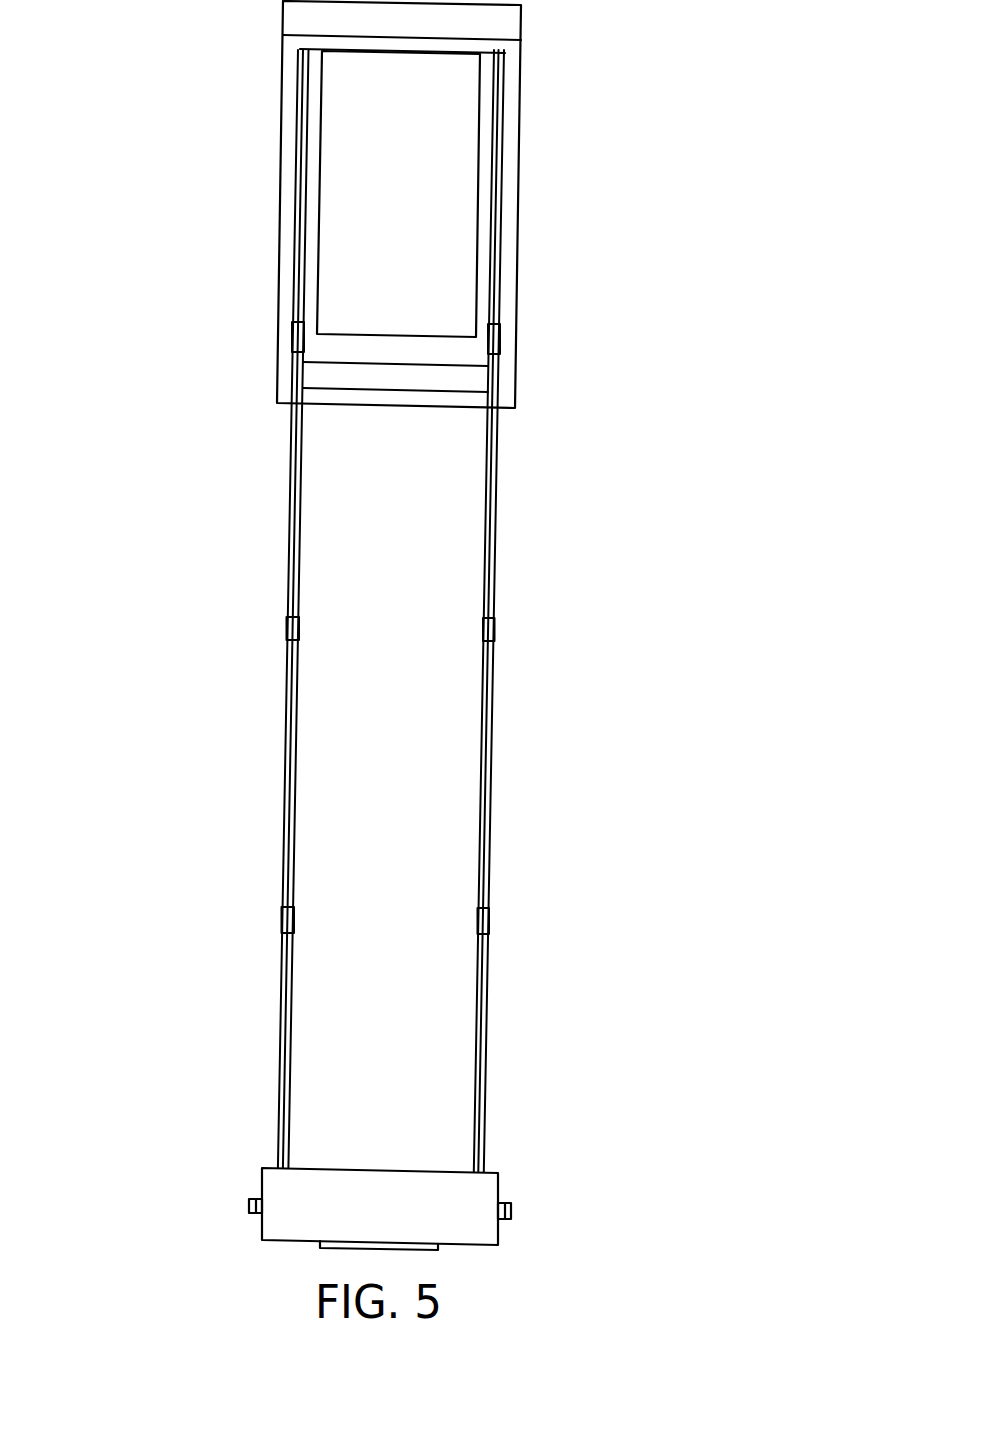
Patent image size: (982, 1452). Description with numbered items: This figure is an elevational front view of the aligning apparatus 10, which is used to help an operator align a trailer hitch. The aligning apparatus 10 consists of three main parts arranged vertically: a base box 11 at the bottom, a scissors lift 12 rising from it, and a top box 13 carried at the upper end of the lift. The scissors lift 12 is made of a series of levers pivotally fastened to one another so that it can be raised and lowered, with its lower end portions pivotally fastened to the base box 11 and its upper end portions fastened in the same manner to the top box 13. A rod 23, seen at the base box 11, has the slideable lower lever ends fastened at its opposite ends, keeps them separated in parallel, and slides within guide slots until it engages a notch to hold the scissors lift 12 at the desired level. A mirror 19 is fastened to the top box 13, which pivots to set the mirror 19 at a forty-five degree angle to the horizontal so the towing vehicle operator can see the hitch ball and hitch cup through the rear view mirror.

The aligning apparatus 10 is at (685, 741).
The base box 11 is at (563, 1158).
The scissors lift 12 is at (246, 710).
The top box 13 is at (212, 238).
The mirror 19 is at (403, 161).
The rod 23 is at (248, 1205).